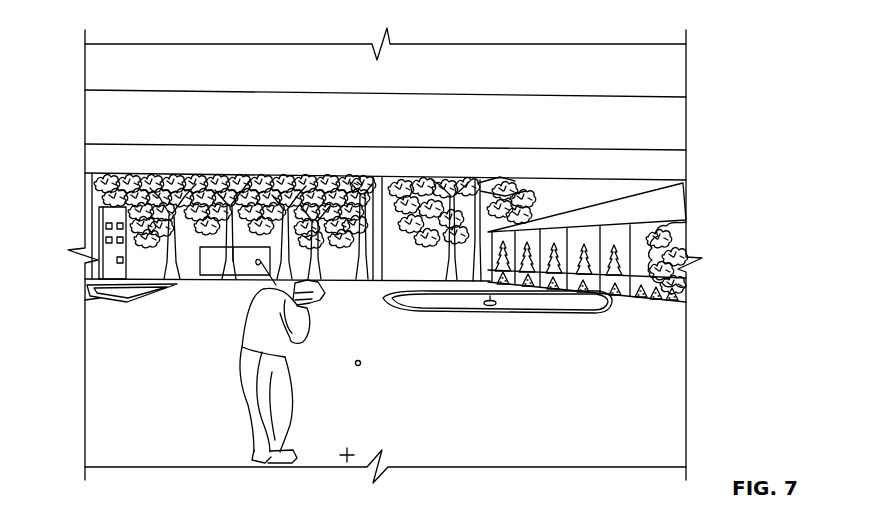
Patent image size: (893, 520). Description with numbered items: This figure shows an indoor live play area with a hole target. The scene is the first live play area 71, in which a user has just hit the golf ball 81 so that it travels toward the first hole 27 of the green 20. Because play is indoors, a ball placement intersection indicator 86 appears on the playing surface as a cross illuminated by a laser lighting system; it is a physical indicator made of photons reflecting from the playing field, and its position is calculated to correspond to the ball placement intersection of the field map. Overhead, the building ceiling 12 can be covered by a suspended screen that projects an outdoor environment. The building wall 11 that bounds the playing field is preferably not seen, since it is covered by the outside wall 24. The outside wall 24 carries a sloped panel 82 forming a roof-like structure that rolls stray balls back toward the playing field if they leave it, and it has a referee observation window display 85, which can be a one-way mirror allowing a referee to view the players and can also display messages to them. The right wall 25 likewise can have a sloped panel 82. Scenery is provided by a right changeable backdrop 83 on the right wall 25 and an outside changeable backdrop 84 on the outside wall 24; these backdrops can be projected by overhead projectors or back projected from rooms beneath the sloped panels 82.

The building wall 11 is at (668, 118).
The building ceiling 12 is at (668, 65).
The green 20 is at (457, 400).
The outside wall 24 is at (542, 193).
The right wall 25 is at (672, 245).
The first hole 27 is at (492, 306).
The first live play area 71 is at (102, 408).
The golf ball 81 is at (358, 367).
The sloped panel 82 is at (102, 163).
The right changeable backdrop 83 is at (683, 297).
The outside changeable backdrop 84 is at (430, 190).
The referee observation window display 85 is at (277, 175).
The ball placement intersection indicator 86 is at (346, 455).